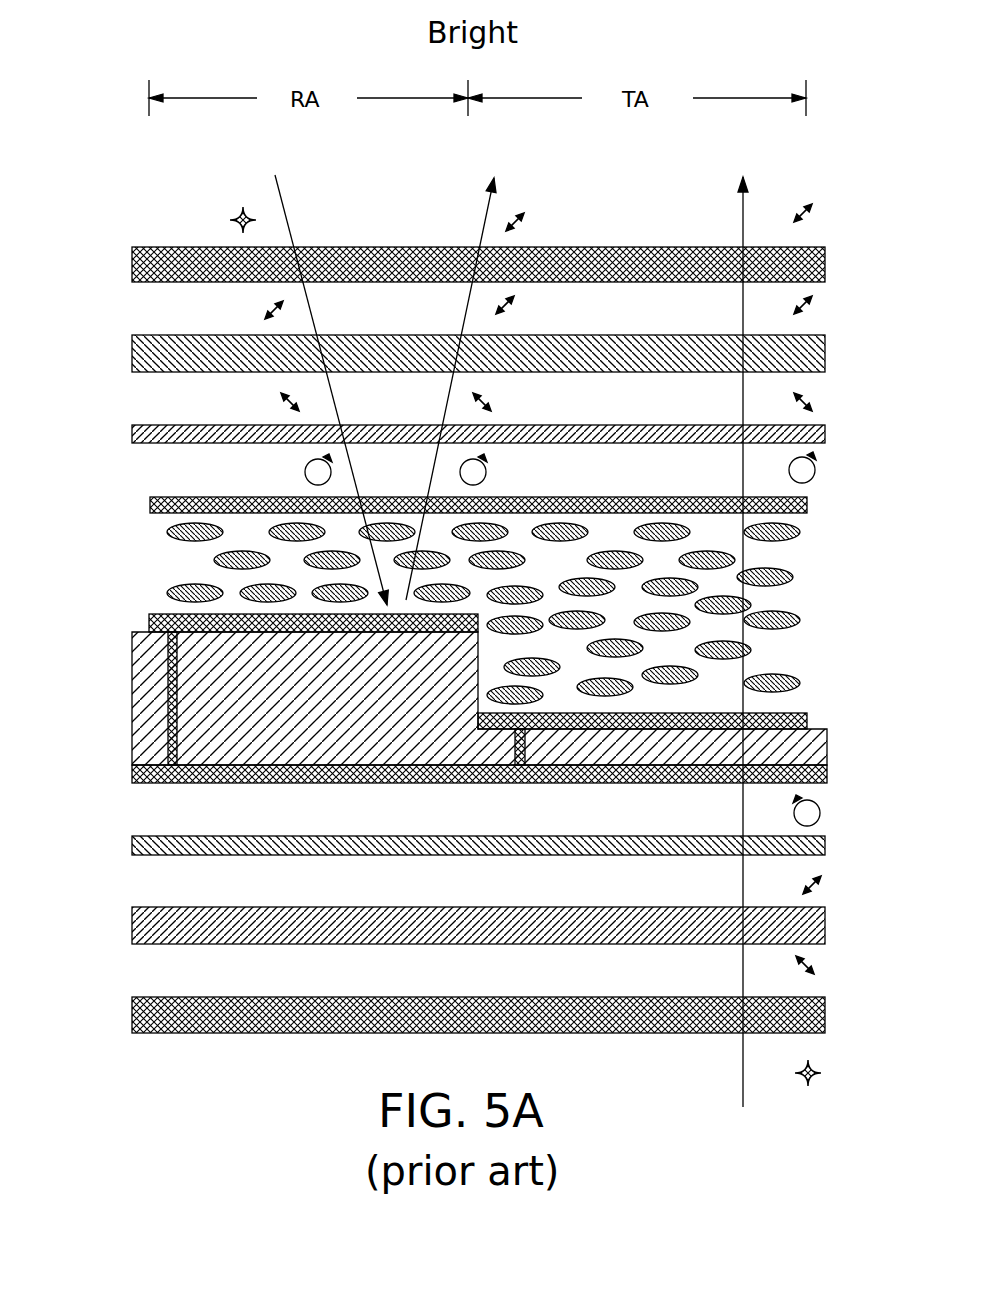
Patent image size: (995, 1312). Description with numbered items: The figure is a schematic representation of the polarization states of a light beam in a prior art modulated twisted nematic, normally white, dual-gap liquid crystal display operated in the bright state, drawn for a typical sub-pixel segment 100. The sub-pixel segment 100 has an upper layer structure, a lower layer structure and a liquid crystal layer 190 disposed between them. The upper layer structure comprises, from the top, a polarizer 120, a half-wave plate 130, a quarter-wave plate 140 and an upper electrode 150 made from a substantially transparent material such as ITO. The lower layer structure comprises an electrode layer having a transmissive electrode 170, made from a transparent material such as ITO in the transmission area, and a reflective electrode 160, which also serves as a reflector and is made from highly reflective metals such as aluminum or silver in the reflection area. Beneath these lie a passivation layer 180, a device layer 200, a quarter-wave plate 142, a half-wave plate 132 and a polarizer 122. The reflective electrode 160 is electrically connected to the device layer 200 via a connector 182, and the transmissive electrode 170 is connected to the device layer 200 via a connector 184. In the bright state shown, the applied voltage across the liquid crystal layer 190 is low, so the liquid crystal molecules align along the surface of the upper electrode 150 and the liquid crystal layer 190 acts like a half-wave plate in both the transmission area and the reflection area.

The sub-pixel segment 100 is at (187, 178).
The polarizer 120 is at (132, 263).
The half-wave plate 130 is at (132, 352).
The quarter-wave plate 140 is at (132, 434).
The upper electrode 150 is at (150, 507).
The liquid crystal layer 190 is at (150, 559).
The reflective electrode 160 is at (158, 613).
The passivation layer 180 is at (132, 677).
The connector 182 is at (168, 729).
The connector 184 is at (522, 748).
The transmissive electrode 170 is at (807, 722).
The device layer 200 is at (132, 773).
The quarter-wave plate 142 is at (132, 845).
The half-wave plate 132 is at (132, 927).
The polarizer 122 is at (132, 1015).